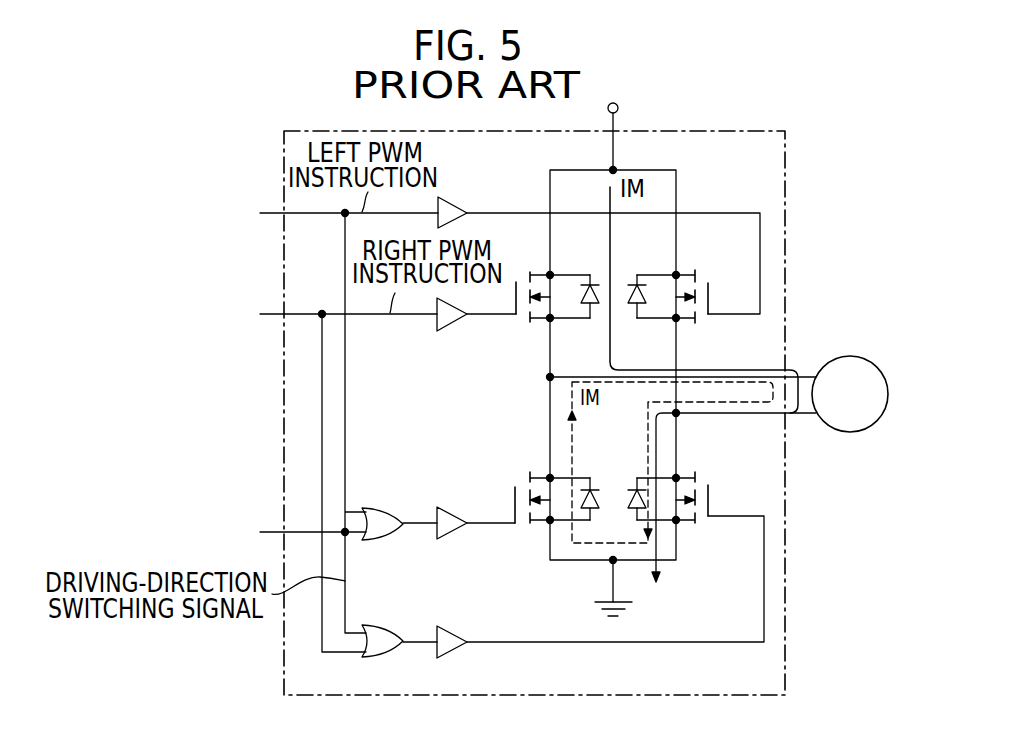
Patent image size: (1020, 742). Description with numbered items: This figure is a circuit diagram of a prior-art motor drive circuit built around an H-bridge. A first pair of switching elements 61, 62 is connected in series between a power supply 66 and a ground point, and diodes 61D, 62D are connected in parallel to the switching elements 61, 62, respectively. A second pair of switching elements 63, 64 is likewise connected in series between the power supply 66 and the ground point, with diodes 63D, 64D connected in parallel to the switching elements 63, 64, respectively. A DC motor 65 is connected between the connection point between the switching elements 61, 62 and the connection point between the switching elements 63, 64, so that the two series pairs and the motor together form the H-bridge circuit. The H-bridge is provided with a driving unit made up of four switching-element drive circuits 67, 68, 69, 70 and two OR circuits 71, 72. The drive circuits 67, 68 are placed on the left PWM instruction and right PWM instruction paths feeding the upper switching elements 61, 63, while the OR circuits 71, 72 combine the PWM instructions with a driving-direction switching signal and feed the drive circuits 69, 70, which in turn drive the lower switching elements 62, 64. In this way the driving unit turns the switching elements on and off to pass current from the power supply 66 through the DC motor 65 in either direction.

The switching element 61 is at (523, 318).
The diode 61D is at (588, 306).
The switching element 62 is at (522, 528).
The diode 62D is at (603, 482).
The switching element 63 is at (704, 314).
The diode 63D is at (639, 306).
The switching element 64 is at (704, 520).
The diode 64D is at (640, 482).
The DC motor 65 is at (870, 362).
The power supply 66 is at (619, 108).
The switching-element drive circuit 67 is at (450, 197).
The switching-element drive circuit 68 is at (445, 331).
The switching-element drive circuit 69 is at (452, 506).
The switching-element drive circuit 70 is at (452, 657).
The OR circuit 71 is at (378, 506).
The OR circuit 72 is at (365, 658).